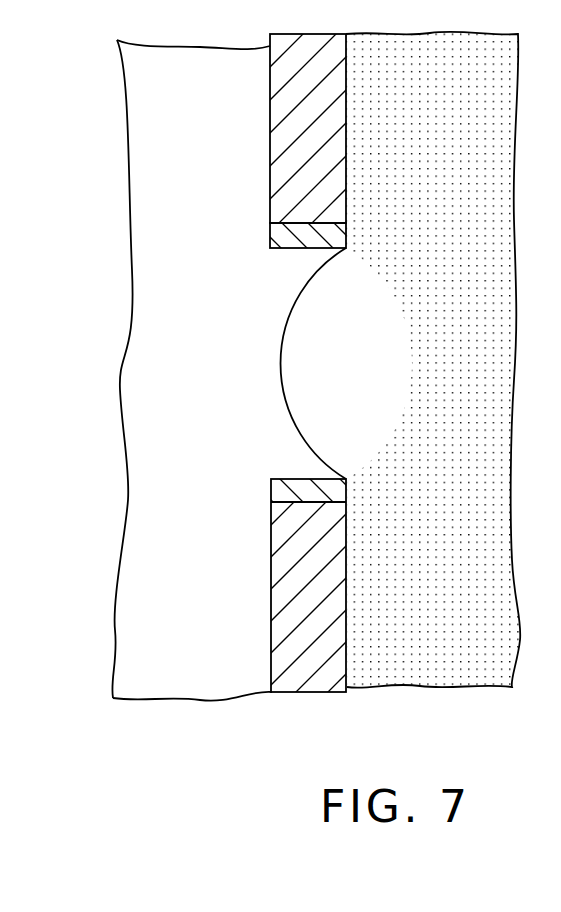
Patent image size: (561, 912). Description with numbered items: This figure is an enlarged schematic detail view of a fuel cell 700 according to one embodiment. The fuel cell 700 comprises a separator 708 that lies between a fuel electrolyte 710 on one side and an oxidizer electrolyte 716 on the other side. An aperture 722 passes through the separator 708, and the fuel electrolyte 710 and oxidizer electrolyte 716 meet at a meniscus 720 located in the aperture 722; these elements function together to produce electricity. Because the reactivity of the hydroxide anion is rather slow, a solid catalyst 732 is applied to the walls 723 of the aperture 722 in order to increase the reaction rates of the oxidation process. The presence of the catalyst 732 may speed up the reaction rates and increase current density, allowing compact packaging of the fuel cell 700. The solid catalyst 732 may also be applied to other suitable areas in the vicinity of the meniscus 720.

The fuel cell 700 is at (205, 728).
The separator 708 is at (268, 672).
The fuel electrolyte 710 is at (200, 376).
The oxidizer electrolyte 716 is at (452, 116).
The meniscus 720 is at (289, 307).
The aperture 722 is at (262, 454).
The walls of aperture 723 is at (300, 222).
The solid catalyst 732 is at (287, 239).